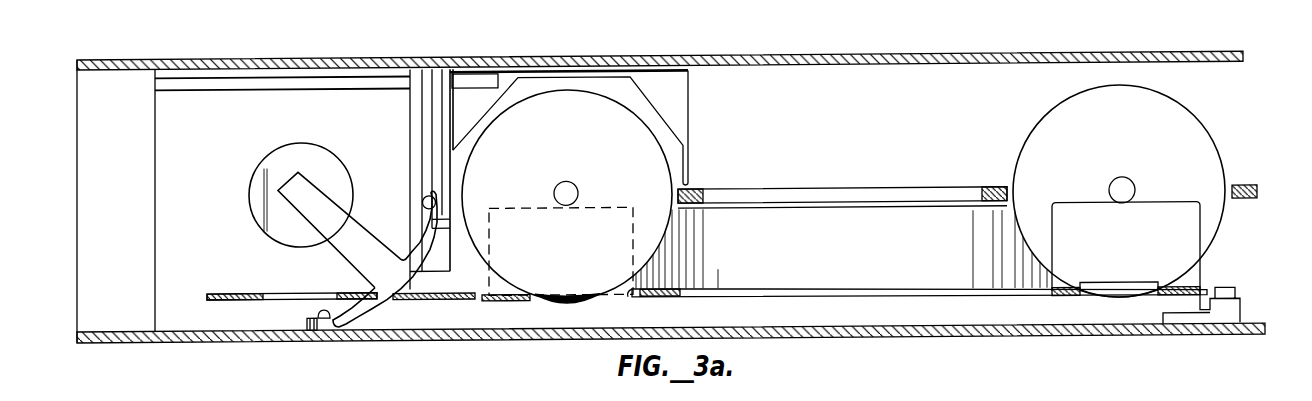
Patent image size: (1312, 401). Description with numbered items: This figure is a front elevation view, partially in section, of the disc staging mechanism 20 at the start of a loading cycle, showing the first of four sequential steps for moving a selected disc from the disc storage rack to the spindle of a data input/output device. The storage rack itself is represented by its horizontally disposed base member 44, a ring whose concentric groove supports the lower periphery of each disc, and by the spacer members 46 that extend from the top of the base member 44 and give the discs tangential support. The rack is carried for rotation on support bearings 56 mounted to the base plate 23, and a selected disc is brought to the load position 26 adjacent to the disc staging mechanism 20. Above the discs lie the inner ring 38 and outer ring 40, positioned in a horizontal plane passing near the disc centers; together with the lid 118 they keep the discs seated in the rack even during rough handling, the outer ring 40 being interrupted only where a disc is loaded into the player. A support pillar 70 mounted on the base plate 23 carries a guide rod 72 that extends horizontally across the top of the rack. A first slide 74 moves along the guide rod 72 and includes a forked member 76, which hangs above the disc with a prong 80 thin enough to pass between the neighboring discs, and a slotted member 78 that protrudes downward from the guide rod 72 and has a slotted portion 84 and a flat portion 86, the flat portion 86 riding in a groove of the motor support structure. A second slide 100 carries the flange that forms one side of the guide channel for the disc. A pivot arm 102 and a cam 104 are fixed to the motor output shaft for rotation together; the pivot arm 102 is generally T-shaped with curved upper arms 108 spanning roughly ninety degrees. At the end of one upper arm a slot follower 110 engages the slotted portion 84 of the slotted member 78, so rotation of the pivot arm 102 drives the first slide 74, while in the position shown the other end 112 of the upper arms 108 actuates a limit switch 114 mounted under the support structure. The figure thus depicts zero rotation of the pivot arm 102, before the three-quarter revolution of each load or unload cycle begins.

The disc staging mechanism 20 is at (598, 49).
The base plate 23 is at (207, 331).
The load position 26 is at (550, 166).
The inner ring 38 is at (992, 192).
The outer ring 40 is at (1245, 192).
The base member 44 is at (627, 297).
The spacer members 46 is at (1202, 281).
The support bearings 56 is at (1243, 312).
The support pillar 70 is at (155, 118).
The guide rod 72 is at (278, 94).
The first slide 74 is at (461, 60).
The forked member 76 is at (677, 102).
The slotted member 78 is at (406, 148).
The prong 80 is at (693, 165).
The slotted portion 84 is at (423, 112).
The flat portion 86 is at (446, 268).
The second slide 100 is at (233, 296).
The pivot arm 102 is at (345, 262).
The cam 104 is at (249, 215).
The curved upper arms 108 is at (370, 315).
The slot follower 110 is at (422, 214).
The other end 112 is at (327, 319).
The limit switch 114 is at (305, 326).
The lid 118 is at (870, 57).